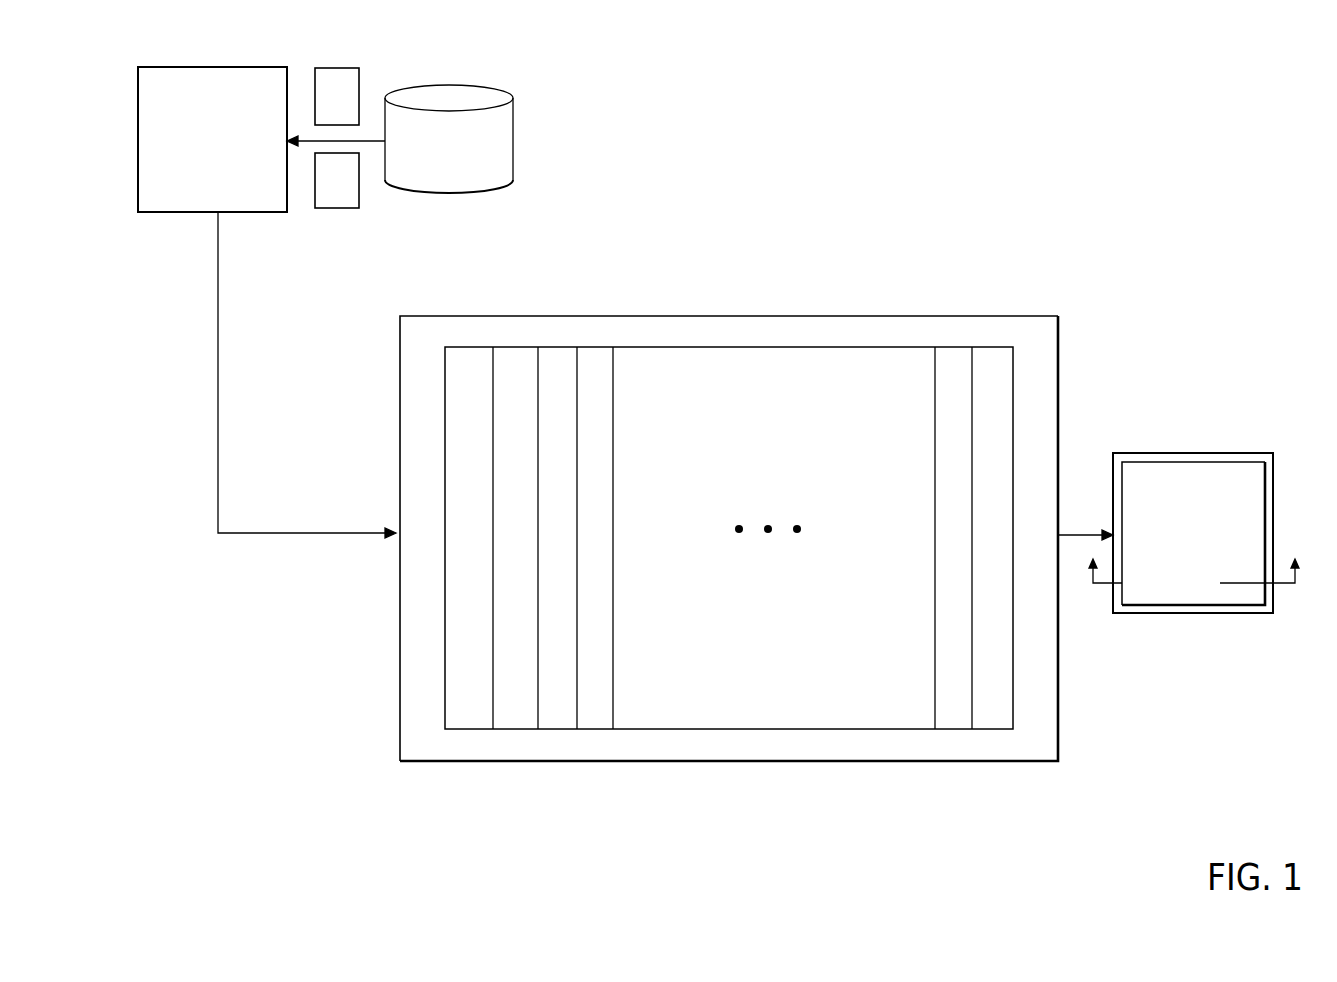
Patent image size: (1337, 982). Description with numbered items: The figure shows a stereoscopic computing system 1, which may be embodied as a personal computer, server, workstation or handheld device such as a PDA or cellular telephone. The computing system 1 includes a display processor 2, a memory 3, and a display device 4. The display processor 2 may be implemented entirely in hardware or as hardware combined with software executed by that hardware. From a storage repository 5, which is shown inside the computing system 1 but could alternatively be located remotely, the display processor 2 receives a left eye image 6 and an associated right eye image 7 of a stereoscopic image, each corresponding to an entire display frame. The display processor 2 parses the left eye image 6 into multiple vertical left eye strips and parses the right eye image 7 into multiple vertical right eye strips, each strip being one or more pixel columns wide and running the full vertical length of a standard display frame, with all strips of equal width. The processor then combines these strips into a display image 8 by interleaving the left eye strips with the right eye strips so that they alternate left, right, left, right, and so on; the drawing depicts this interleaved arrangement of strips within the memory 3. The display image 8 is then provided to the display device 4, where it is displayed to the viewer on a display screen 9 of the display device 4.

The computing system 1 is at (1222, 55).
The display processor 2 is at (254, 199).
The memory 3 is at (947, 315).
The display device 4 is at (1135, 453).
The storage repository 5 is at (439, 156).
The left eye image 6 is at (340, 68).
The right eye image 7 is at (340, 208).
The display image 8 is at (817, 346).
The display screen 9 is at (1190, 605).